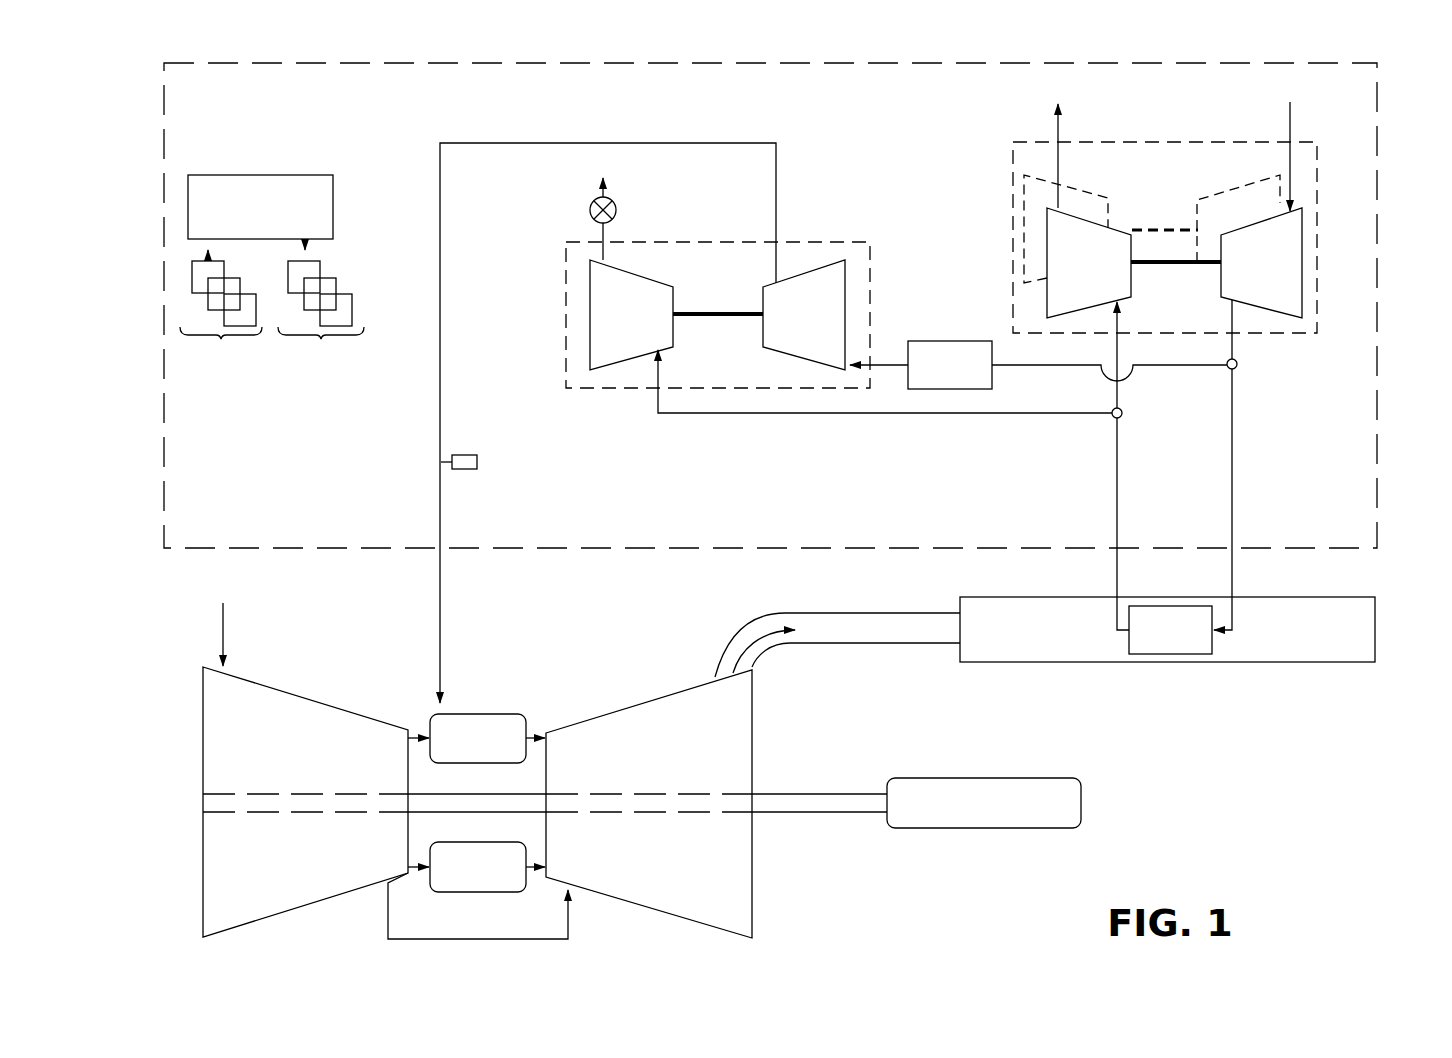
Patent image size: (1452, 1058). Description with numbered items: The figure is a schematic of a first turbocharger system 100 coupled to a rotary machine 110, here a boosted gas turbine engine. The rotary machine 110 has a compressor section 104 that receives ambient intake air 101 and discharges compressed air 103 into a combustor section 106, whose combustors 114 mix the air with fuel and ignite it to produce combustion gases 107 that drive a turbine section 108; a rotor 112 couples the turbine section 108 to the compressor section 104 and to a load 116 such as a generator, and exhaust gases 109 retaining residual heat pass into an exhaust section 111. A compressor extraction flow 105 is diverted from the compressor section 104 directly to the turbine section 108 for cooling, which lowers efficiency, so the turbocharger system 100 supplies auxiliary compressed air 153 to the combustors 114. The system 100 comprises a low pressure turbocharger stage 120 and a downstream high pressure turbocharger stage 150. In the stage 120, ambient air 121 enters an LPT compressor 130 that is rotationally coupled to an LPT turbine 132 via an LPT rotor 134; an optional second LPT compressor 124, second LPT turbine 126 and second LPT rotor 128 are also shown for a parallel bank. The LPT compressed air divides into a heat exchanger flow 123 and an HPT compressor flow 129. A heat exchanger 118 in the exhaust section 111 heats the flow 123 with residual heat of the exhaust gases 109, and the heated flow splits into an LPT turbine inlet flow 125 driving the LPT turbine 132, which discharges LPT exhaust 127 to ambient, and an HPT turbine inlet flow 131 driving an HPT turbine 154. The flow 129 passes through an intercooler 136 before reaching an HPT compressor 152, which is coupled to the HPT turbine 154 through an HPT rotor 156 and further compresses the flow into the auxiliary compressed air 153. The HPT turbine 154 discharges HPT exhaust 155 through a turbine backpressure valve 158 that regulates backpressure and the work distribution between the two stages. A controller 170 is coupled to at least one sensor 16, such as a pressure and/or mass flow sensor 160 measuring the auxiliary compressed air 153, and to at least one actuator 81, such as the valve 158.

The first turbocharger system 100 is at (1377, 198).
The rotary machine 110 is at (138, 562).
The controller 170 is at (260, 207).
The sensor 16 is at (221, 319).
The actuator 81 is at (321, 314).
The auxiliary compressed air 153 is at (713, 143).
The pressure and/or mass flow sensor 160 is at (465, 455).
The high pressure turbocharger stage 150 is at (829, 240).
The HPT turbine 154 is at (631, 315).
The HPT compressor 152 is at (804, 315).
The HPT rotor 156 is at (722, 313).
The HPT exhaust 155 is at (603, 238).
The turbine backpressure valve 158 is at (616, 202).
The intercooler 136 is at (950, 365).
The HPT compressor flow 129 is at (885, 365).
The HPT turbine inlet flow 131 is at (960, 416).
The LPT turbine inlet flow 125 is at (1116, 394).
The heat exchanger flow 123 is at (1232, 405).
The low pressure turbocharger stage 120 is at (1293, 141).
The LPT turbine 132 is at (1089, 263).
The LPT compressor 130 is at (1261, 263).
The LPT rotor 134 is at (1162, 263).
The second LPT turbine 126 is at (1085, 194).
The second LPT compressor 124 is at (1213, 188).
The second LPT rotor 128 is at (1150, 230).
The LPT exhaust 127 is at (1058, 136).
The ambient air 121 is at (1290, 133).
The compressor section 104 is at (253, 682).
The ambient intake air 101 is at (222, 632).
The combustor section 106 is at (420, 676).
The turbine section 108 is at (655, 698).
The combustors 114 is at (478, 803).
The compressed air 103 is at (420, 735).
The combustion gases 107 is at (535, 733).
The compressor extraction flow 105 is at (455, 938).
The rotor 112 is at (455, 794).
The load 116 is at (984, 803).
The exhaust gases 109 is at (748, 637).
The exhaust section 111 is at (988, 597).
The heat exchanger 118 is at (1170, 630).